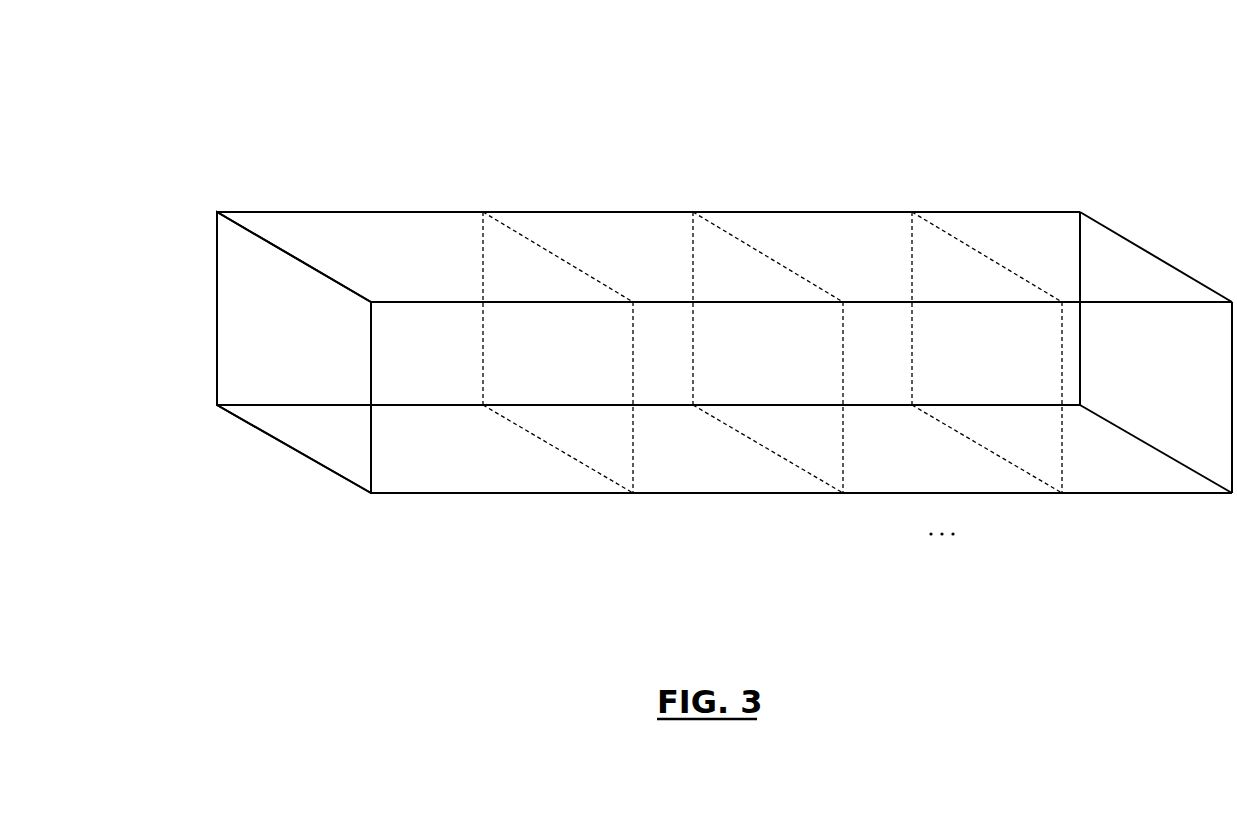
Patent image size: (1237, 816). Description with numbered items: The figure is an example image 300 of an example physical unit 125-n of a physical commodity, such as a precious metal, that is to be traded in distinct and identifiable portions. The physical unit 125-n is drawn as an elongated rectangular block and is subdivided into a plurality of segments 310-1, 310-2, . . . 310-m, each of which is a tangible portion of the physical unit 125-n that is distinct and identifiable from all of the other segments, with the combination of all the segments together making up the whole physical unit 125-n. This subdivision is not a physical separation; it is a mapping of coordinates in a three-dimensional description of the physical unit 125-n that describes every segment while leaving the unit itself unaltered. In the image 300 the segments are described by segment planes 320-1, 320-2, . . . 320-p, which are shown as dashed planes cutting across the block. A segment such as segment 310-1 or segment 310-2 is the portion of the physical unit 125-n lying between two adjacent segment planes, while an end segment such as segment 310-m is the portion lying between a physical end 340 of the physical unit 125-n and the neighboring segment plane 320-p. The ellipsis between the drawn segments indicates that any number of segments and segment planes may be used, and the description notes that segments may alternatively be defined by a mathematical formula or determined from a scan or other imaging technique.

The image 300 is at (403, 117).
The physical end 340 is at (1188, 255).
The physical unit 125-n is at (257, 427).
The segment plane 320-1 is at (520, 237).
The segment plane 320-2 is at (710, 230).
The segment plane 320-p is at (948, 233).
The segment 310-1 is at (452, 445).
The segment 310-2 is at (693, 453).
The segment 310-m is at (1127, 460).